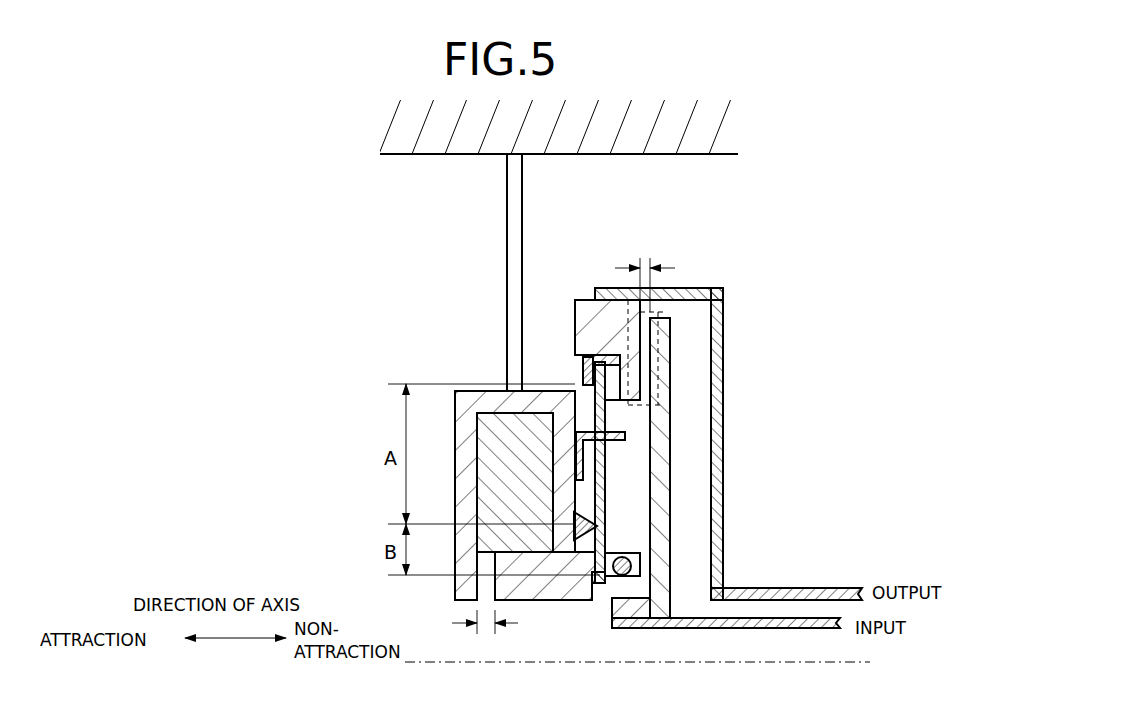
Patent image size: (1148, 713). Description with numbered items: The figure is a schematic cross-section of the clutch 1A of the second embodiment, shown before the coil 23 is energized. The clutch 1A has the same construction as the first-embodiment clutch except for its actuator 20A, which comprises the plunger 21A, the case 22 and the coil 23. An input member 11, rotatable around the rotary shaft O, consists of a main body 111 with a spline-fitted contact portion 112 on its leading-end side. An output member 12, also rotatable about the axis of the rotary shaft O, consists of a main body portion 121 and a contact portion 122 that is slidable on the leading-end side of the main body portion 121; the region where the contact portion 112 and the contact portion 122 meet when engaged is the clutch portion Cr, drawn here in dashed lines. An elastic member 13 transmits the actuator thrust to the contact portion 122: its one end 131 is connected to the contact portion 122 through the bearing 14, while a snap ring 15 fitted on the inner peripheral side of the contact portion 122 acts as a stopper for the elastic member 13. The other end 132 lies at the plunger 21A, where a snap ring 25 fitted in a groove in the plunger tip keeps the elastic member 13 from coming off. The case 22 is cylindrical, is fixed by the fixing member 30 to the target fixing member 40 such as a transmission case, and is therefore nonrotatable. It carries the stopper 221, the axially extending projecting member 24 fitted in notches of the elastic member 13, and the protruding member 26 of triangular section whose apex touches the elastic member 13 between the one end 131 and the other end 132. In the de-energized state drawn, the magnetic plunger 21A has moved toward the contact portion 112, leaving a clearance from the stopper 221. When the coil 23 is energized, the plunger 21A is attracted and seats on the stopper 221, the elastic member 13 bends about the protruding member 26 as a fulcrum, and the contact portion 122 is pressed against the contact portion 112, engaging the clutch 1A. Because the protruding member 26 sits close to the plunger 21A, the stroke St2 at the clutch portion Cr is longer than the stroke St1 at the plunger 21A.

The clutch 1A is at (845, 178).
The input member 11 is at (726, 513).
The main body 111 is at (688, 630).
The contact portion 112 is at (668, 405).
The output member 12 is at (717, 418).
The main body portion 121 is at (724, 582).
The contact portion 122 is at (576, 298).
The elastic member 13 is at (669, 531).
The one end 131 is at (590, 290).
The other end 132 is at (598, 585).
The bearing 14 is at (660, 353).
The snap ring 15 is at (583, 365).
The actuator 20A is at (478, 476).
The plunger 21A is at (537, 612).
The case 22 is at (478, 391).
The stopper 221 is at (480, 593).
The coil 23 is at (477, 482).
The projecting member 24 is at (584, 437).
The snap ring 25 is at (625, 578).
The protruding member 26 is at (590, 506).
The fixing member 30 is at (506, 197).
The target fixing member 40 is at (716, 155).
The clutch portion Cr is at (668, 331).
The stroke St1 is at (478, 637).
The stroke St2 is at (646, 262).
The rotary shaft O is at (853, 666).